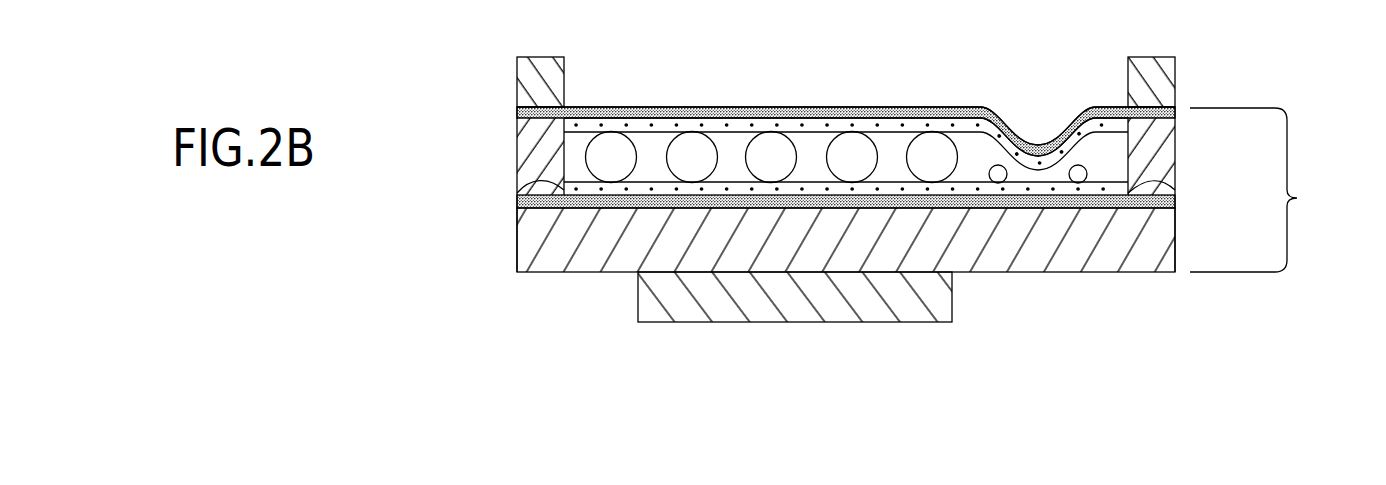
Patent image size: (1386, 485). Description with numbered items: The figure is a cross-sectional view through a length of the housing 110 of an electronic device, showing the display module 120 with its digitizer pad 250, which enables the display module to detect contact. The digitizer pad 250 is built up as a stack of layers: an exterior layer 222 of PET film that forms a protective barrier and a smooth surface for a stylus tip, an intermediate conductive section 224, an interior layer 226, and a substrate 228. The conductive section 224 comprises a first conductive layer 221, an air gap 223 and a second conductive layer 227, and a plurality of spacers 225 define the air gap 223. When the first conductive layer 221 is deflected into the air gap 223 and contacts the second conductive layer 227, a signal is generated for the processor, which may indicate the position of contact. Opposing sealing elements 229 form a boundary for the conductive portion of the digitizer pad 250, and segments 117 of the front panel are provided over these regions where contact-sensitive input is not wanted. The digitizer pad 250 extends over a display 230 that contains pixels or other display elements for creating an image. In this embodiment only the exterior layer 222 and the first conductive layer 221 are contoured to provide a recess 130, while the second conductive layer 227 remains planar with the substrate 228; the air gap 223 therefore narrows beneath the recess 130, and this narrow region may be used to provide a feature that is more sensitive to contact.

The housing 110 is at (540, 48).
The segments of front panel 117 is at (517, 78).
The display module 120 is at (836, 96).
The recess 130 is at (1040, 134).
The first conductive layer 221 is at (517, 122).
The exterior layer 222 is at (1175, 118).
The air gap 223 is at (661, 126).
The intermediate conductive section 224 is at (650, 157).
The spacers 225 is at (896, 148).
The interior layer 226 is at (517, 205).
The second conductive layer 227 is at (545, 187).
The substrate 228 is at (1165, 235).
The sealing elements 229 is at (530, 159).
The display 230 is at (952, 300).
The digitizer pad 250 is at (1268, 190).